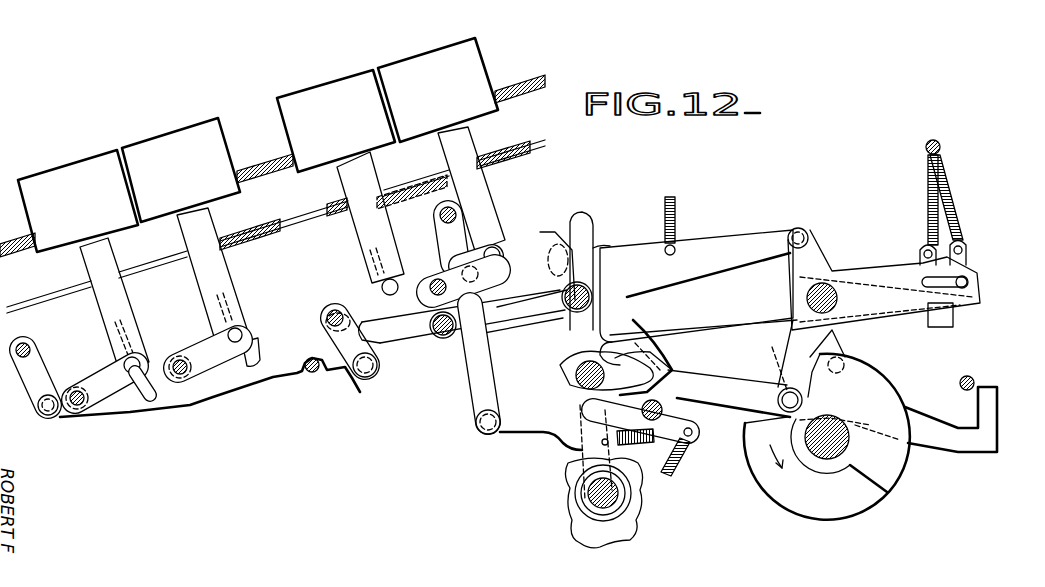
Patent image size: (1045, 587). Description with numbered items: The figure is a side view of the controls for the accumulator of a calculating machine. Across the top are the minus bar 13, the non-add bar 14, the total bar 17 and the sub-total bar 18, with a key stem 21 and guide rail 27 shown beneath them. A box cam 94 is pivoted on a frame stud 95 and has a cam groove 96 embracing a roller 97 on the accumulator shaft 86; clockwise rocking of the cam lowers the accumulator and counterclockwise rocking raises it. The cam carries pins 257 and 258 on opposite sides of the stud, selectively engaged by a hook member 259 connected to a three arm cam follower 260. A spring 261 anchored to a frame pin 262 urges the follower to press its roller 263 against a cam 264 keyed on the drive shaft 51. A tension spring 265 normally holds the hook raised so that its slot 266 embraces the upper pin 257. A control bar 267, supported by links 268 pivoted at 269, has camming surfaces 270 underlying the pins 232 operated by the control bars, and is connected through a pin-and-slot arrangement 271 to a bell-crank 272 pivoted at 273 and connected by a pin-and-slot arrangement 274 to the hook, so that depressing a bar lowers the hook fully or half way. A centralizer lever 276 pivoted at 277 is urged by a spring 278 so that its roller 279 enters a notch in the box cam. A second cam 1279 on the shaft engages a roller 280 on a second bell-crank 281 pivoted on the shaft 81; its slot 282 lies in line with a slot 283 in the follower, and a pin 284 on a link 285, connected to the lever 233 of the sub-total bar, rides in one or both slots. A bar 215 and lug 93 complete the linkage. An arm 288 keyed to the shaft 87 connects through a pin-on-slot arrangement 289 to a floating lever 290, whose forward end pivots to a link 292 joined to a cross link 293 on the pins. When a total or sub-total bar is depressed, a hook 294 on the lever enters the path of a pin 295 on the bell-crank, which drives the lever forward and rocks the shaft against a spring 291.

The minus bar 13 is at (40, 182).
The non-add bar 14 is at (172, 140).
The total bar 17 is at (452, 48).
The sub-total bar 18 is at (342, 90).
The key stem 21 is at (190, 340).
The rail 27 is at (284, 232).
The drive shaft 51 is at (825, 450).
The shaft 81 is at (835, 298).
The accumulator shaft 86 is at (576, 382).
The shaft 87 is at (632, 505).
The lug 93 is at (634, 545).
The box cam 94 is at (620, 342).
The frame stud 95 is at (593, 298).
The cam groove 96 is at (660, 358).
The roller 97 is at (582, 408).
The link bar 215 is at (535, 333).
The pins 232 is at (378, 290).
The lever 233 is at (218, 360).
The upper pin 257 is at (550, 240).
The pin 258 is at (645, 340).
The hook member 259 is at (730, 236).
The three arm cam follower 260 is at (815, 255).
The spring 261 is at (960, 215).
The frame pin 262 is at (942, 148).
The roller 263 is at (778, 398).
The cam 264 is at (880, 385).
The tension spring 265 is at (678, 210).
The slot 266 is at (593, 240).
The control bar 267 is at (318, 315).
The links 268 is at (55, 380).
The pivots 269 is at (30, 345).
The camming surfaces 270 is at (148, 405).
The pin-and-slot arrangement 271 is at (452, 385).
The bell-crank 272 is at (440, 370).
The pivot 273 is at (430, 325).
The pin-and-slot arrangement 274 is at (609, 260).
The centralizer lever 276 is at (692, 432).
The pivot 277 is at (670, 410).
The spring 278 is at (684, 448).
The roller 279 is at (552, 436).
The roller 280 is at (765, 355).
The second bell-crank 281 is at (840, 335).
The slot 282 is at (955, 305).
The slot 283 is at (968, 280).
The pin 284 is at (968, 284).
The link 285 is at (758, 300).
The arm 288 is at (570, 455).
The pin-on-slot arrangement 289 is at (640, 478).
The floating lever 290 is at (716, 380).
The spring 291 is at (675, 470).
The link 292 is at (470, 410).
The cross link 293 is at (425, 265).
The hook 294 is at (836, 392).
The pin 295 is at (850, 358).
The second cam 1279 is at (790, 498).